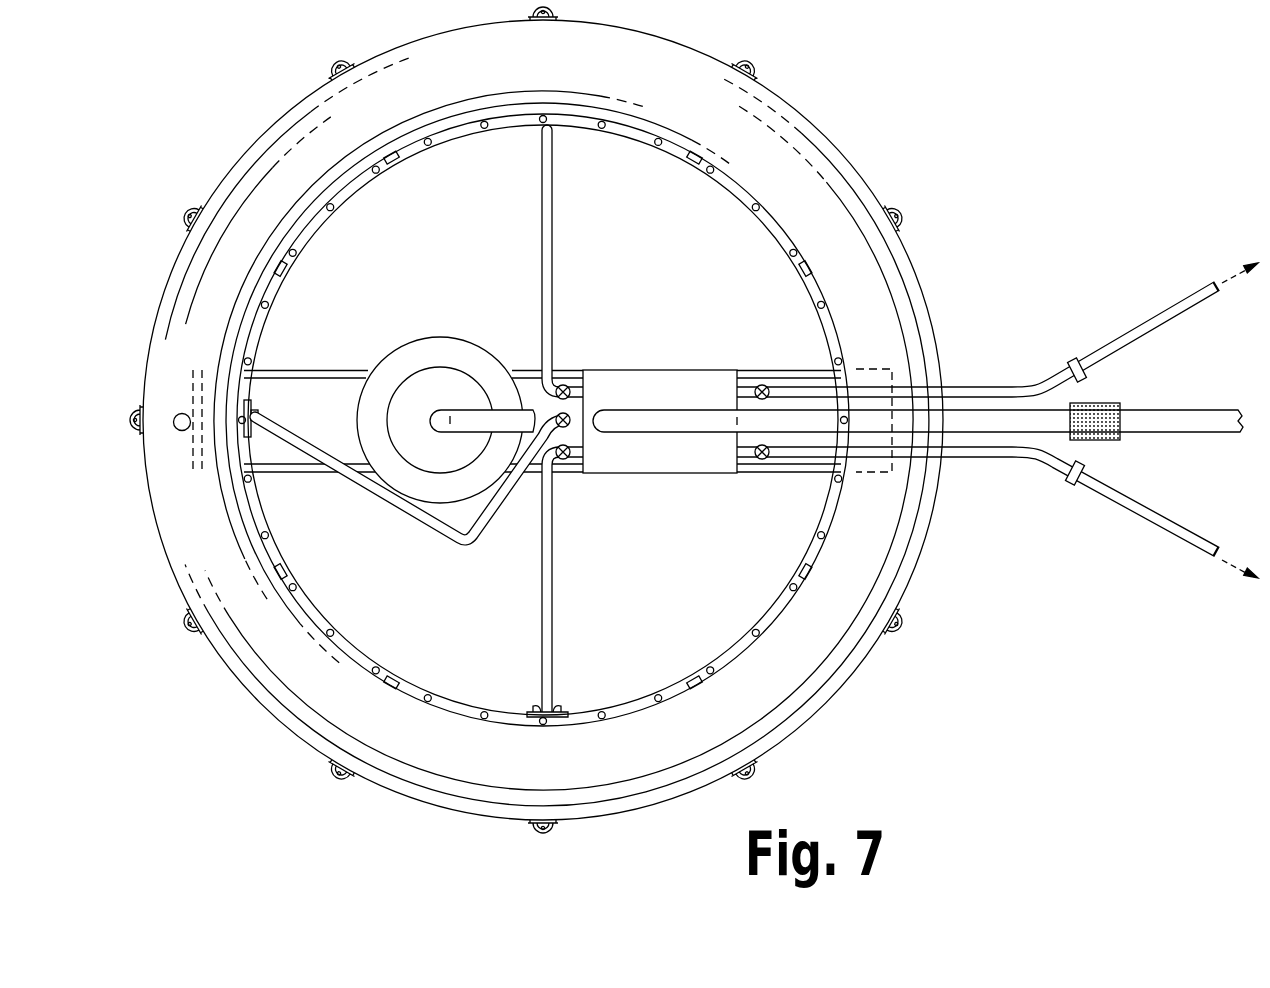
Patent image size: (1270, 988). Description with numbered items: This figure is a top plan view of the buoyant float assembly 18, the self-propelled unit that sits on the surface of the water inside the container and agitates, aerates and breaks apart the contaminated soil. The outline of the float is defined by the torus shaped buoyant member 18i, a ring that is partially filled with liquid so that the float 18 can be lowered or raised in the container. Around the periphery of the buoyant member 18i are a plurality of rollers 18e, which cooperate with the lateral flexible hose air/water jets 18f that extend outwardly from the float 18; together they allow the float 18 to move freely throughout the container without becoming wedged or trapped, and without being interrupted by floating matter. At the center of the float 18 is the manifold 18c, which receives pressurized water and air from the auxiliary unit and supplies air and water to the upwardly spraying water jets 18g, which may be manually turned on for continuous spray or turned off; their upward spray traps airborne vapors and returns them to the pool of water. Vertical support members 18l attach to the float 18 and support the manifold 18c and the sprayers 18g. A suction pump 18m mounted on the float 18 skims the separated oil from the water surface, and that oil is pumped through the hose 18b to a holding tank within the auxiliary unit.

The buoyant float assembly 18 is at (523, 420).
The hose 18b is at (1175, 413).
The manifold 18c is at (645, 462).
The rollers 18e is at (530, 422).
The flexible hose air/water jets 18f is at (1140, 327).
The upwardly spraying water jets 18g is at (543, 420).
The torus shaped buoyant member 18i is at (471, 365).
The vertical support members 18l is at (282, 371).
The suction pump 18m is at (440, 338).